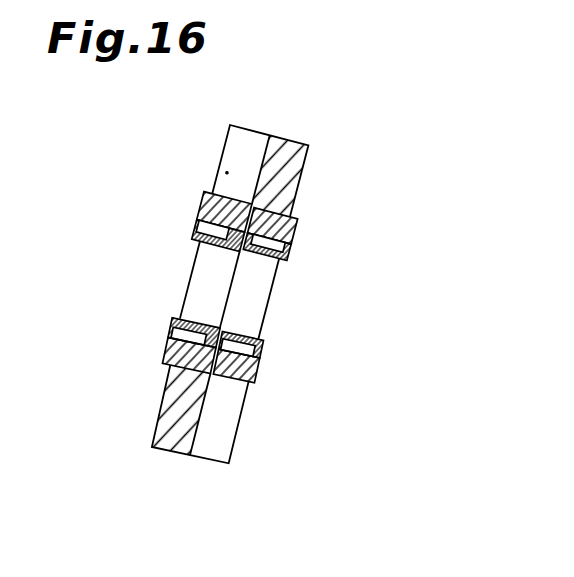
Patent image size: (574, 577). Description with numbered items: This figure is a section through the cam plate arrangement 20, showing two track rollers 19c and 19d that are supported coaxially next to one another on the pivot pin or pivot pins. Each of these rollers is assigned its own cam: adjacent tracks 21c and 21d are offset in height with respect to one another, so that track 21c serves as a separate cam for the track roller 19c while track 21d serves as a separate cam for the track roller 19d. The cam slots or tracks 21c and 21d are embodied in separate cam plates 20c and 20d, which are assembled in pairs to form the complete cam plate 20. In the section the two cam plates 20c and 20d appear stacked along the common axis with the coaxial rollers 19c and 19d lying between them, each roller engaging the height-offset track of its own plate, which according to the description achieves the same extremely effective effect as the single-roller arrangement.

The cam plate 20 is at (160, 158).
The cam plate 20c is at (175, 423).
The cam plate 20d is at (292, 142).
The track 21c is at (180, 378).
The track 21d is at (283, 207).
The track roller 19c is at (168, 341).
The track roller 19d is at (290, 236).